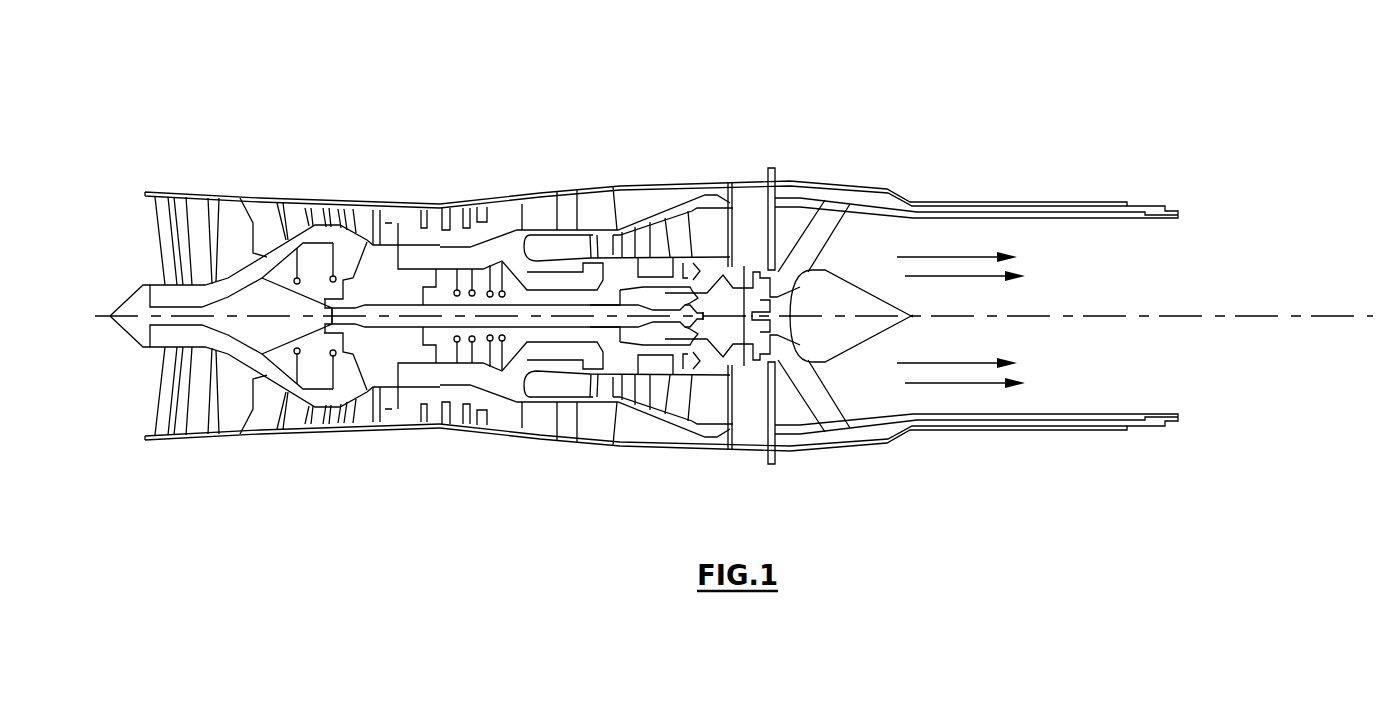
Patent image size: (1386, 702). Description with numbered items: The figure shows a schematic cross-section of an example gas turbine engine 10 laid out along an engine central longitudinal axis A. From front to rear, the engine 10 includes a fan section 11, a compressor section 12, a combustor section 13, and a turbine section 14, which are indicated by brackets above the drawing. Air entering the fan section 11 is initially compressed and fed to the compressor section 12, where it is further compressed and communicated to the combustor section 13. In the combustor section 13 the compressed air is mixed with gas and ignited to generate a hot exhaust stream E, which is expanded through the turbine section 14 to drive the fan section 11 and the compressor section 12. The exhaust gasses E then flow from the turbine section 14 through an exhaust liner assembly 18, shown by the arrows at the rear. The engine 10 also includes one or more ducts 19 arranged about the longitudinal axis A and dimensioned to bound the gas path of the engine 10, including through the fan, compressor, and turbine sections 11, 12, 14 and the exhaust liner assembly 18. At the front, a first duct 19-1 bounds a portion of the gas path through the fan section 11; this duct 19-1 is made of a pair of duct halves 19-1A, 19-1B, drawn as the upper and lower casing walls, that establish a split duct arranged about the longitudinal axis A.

The gas turbine engine 10 is at (903, 69).
The fan section 11 is at (365, 122).
The compressor section 12 is at (538, 122).
The combustor section 13 is at (627, 122).
The turbine section 14 is at (793, 122).
The exhaust liner assembly 18 is at (798, 122).
The ducts 19 is at (652, 212).
The first duct 19-1 is at (292, 322).
The duct half 19-1A is at (263, 192).
The duct half 19-1B is at (263, 441).
The engine central longitudinal axis A is at (1345, 316).
The hot exhaust stream E is at (972, 393).